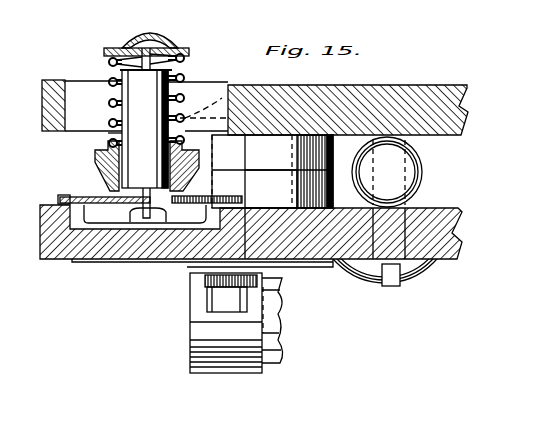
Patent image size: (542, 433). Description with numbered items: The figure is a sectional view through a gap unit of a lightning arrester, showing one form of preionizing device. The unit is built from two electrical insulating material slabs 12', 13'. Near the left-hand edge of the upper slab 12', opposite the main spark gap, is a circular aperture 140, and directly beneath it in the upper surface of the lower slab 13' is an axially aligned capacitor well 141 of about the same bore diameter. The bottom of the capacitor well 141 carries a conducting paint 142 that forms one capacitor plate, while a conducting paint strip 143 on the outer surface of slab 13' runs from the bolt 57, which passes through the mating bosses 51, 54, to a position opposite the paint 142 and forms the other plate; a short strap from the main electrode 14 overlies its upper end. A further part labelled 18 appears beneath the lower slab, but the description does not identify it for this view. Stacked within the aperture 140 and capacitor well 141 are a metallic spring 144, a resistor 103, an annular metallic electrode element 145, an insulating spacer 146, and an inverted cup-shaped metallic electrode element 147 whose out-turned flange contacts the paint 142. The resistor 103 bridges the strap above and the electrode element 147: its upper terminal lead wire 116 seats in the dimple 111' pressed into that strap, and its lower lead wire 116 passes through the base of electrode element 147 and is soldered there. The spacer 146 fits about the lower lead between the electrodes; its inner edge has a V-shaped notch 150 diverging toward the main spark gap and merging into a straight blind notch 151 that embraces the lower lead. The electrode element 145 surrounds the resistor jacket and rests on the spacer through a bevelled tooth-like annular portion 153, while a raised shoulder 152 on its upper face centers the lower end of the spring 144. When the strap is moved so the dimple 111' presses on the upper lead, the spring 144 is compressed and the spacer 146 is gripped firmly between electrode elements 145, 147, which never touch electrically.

The electrical insulating material slab 12' is at (348, 98).
The electrical insulating material slab 13' is at (388, 228).
The main electrode 14 is at (426, 170).
The tab 18 is at (402, 288).
The mating boss 51 is at (272, 171).
The mating boss 54 is at (271, 189).
The bolt 57 is at (219, 99).
The resistor 103 is at (146, 129).
The dimple 111' is at (166, 43).
The terminal lead wire 116 is at (178, 48).
The aperture 140 is at (82, 69).
The capacitor well 141 is at (40, 216).
The conducting paint 142 is at (97, 210).
The conducting paint strip 143 is at (98, 268).
The metallic spring 144 is at (185, 74).
The metallic electrode element 145 is at (95, 162).
The electrical insulating material spacer 146 is at (60, 196).
The metallic electrode element 147 is at (92, 197).
The V-shaped notch 150 is at (222, 196).
The blind notch 151 is at (157, 181).
The raised shoulder 152 is at (120, 132).
The annular portion 153 is at (199, 172).